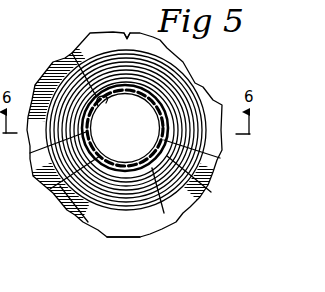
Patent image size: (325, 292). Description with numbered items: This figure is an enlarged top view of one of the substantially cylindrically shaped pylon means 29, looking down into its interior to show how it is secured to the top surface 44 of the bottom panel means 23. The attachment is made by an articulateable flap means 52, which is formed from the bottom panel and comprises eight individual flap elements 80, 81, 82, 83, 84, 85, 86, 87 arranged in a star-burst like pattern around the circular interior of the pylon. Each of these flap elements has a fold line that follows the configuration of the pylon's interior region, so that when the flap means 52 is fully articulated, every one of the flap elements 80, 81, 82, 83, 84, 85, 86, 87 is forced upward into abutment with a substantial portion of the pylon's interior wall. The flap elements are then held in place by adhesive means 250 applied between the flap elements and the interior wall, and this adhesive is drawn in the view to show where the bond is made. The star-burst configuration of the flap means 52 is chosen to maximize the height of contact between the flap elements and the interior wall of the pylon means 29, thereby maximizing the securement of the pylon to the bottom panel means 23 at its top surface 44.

The bottom panel means 23 is at (114, 242).
The pylon means 29 is at (197, 85).
The top surface 44 is at (127, 37).
The articulateable flap means 52 is at (107, 100).
The flap element 80 is at (154, 93).
The flap element 81 is at (218, 158).
The flap element 82 is at (207, 193).
The flap element 83 is at (160, 216).
The flap element 84 is at (64, 190).
The flap element 85 is at (30, 153).
The flap element 86 is at (100, 98).
The flap element 87 is at (121, 92).
The adhesive means 250 is at (70, 212).